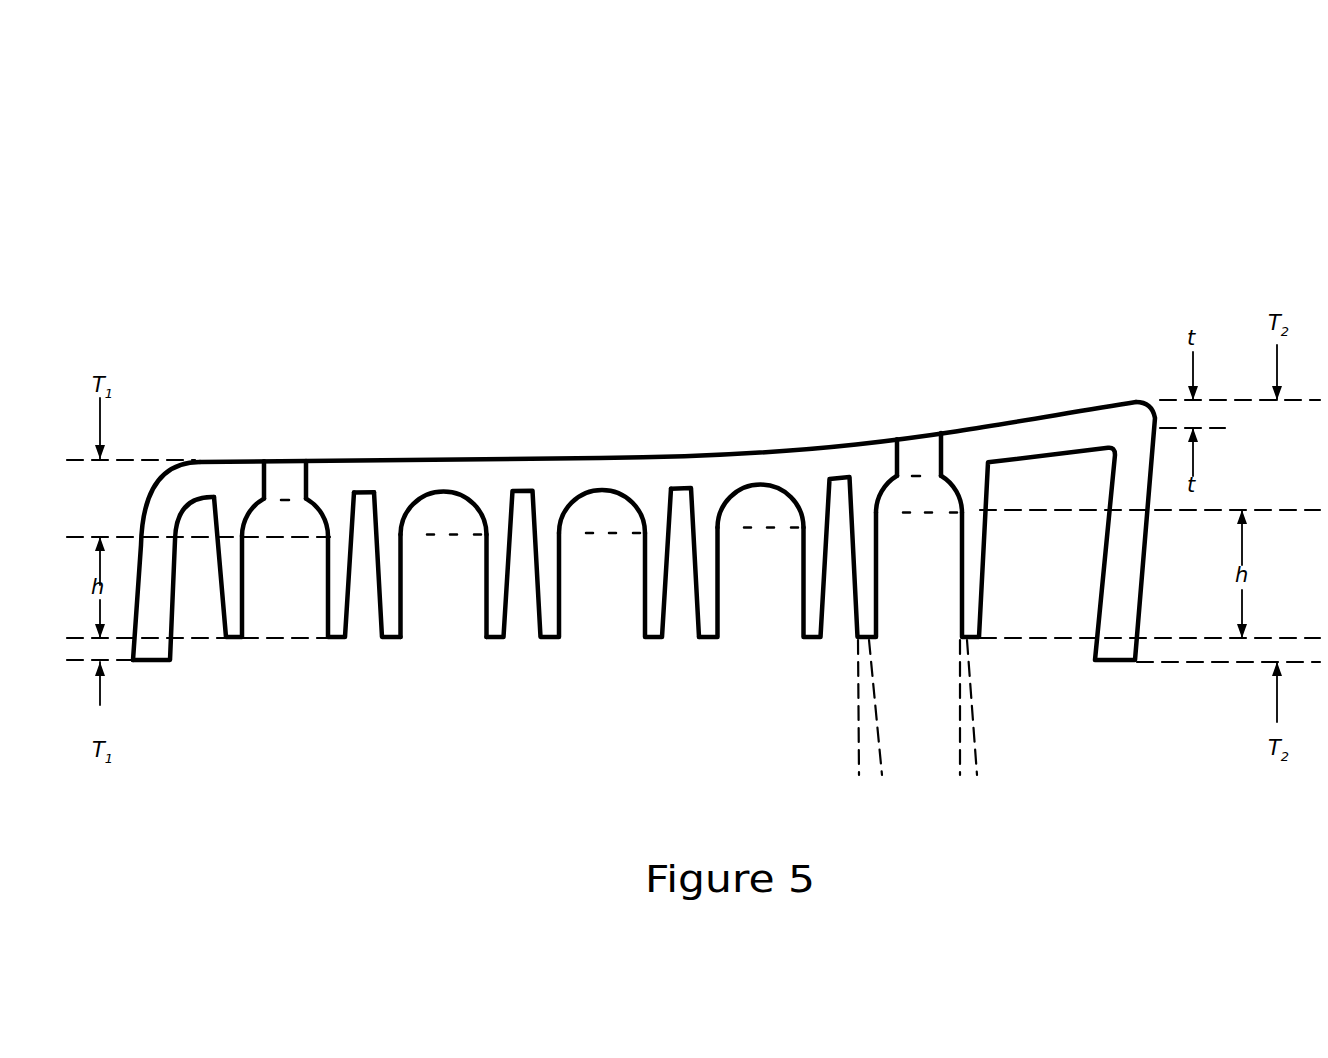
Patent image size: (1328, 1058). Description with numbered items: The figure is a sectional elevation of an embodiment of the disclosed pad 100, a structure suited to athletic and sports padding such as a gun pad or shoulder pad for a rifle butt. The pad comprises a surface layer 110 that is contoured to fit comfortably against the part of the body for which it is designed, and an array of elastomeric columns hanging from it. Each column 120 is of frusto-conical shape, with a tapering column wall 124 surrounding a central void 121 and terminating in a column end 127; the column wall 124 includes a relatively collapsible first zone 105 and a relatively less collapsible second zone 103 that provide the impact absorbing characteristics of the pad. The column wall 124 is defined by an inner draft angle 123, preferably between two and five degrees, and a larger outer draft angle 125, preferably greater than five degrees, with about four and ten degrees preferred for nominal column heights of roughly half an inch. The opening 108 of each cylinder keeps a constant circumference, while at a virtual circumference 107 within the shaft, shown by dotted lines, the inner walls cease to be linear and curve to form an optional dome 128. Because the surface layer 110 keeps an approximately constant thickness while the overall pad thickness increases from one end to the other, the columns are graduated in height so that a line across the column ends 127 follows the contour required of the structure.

The pad 100 is at (338, 192).
The second zone 103 is at (552, 615).
The first zone 105 is at (643, 590).
The virtual circumference 107 is at (552, 615).
The opening 108 is at (447, 633).
The surface layer 110 is at (803, 467).
The column 120 is at (233, 557).
The central void 121 is at (447, 580).
The inner column wall draft angle 123 is at (905, 698).
The column wall 124 is at (393, 580).
The outer column wall draft angle 125 is at (933, 743).
The column end 127 is at (337, 638).
The dome 128 is at (603, 490).